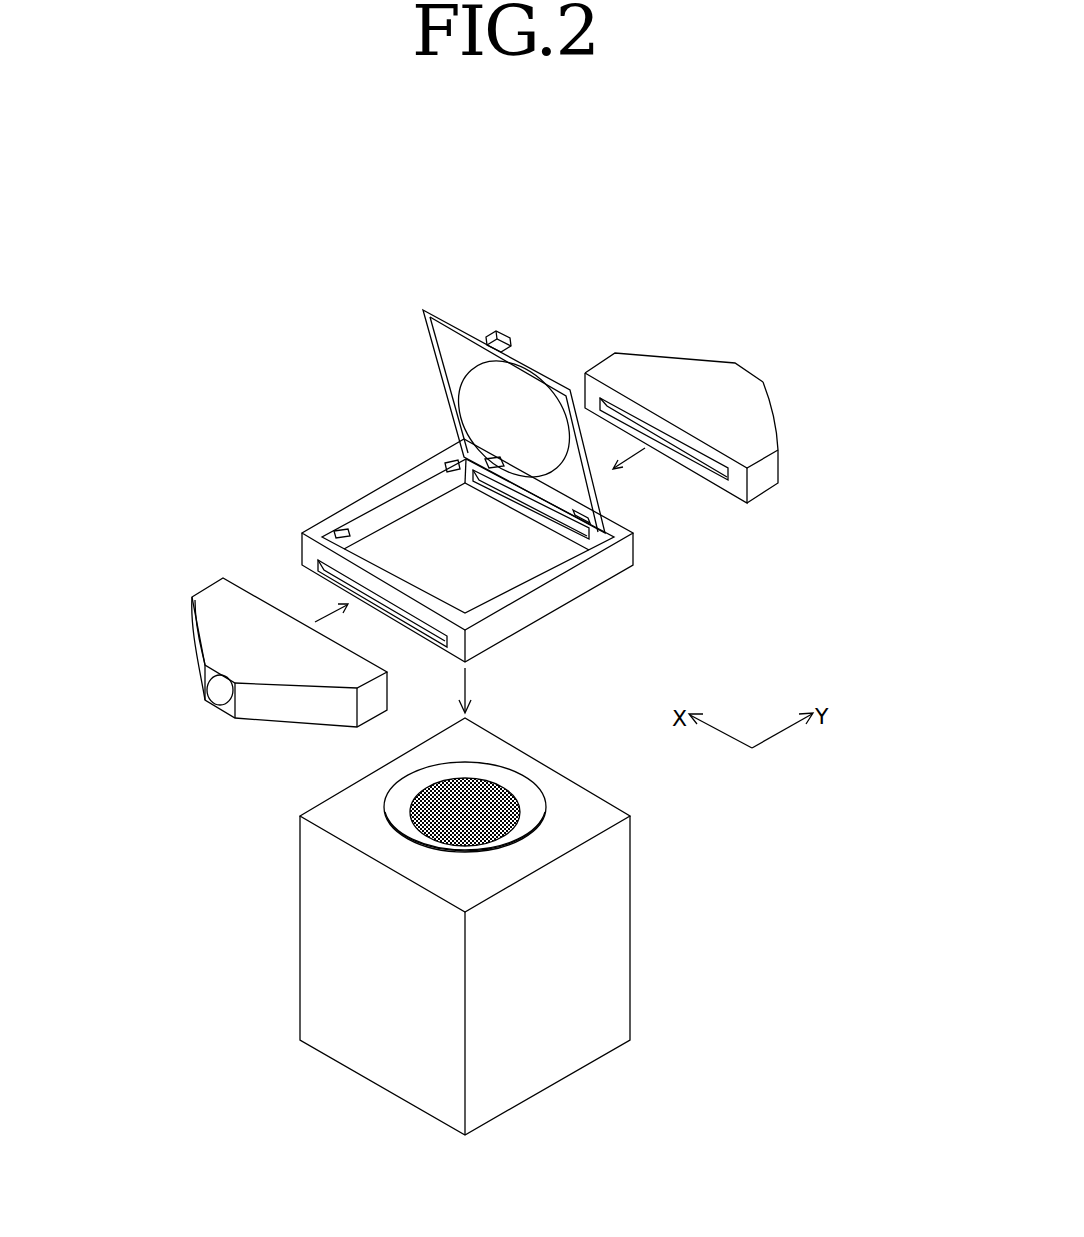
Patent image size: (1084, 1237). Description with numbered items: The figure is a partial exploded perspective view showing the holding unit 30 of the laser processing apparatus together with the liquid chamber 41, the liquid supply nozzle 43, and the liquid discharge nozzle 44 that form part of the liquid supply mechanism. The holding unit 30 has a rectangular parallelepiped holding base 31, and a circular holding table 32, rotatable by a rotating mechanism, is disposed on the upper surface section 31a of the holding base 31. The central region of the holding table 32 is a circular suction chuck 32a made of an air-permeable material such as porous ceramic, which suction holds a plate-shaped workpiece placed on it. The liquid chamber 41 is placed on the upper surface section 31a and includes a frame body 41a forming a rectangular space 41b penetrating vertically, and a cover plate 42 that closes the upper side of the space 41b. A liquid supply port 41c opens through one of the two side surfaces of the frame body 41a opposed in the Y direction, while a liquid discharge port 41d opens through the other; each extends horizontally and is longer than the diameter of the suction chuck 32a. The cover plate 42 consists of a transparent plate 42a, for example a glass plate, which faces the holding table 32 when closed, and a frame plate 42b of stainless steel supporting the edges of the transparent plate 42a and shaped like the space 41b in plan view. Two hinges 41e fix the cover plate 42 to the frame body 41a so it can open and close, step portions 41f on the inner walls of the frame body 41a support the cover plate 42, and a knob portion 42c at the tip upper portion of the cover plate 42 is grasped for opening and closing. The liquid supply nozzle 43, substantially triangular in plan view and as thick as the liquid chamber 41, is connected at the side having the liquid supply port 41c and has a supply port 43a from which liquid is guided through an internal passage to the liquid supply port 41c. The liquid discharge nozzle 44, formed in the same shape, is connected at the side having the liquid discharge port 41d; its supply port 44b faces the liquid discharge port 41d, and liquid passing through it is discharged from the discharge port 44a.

The holding unit 30 is at (655, 862).
The holding base 31 is at (615, 903).
The upper surface section 31a is at (602, 815).
The holding table 32 is at (545, 800).
The suction chuck 32a is at (492, 795).
The liquid chamber 41 is at (586, 581).
The frame body 41a is at (488, 637).
The space 41b is at (484, 583).
The liquid supply port 41c is at (331, 573).
The liquid discharge port 41d is at (524, 505).
The hinges 41e is at (600, 501).
The step portions 41f is at (453, 474).
The cover plate 42 is at (610, 304).
The transparent plate 42a is at (517, 413).
The frame plate 42b is at (533, 383).
The knob portion 42c is at (503, 333).
The liquid supply nozzle 43 is at (300, 707).
The supply port 43a is at (220, 693).
The liquid discharge nozzle 44 is at (765, 430).
The discharge port 44a is at (755, 370).
The supply port 44b is at (715, 467).